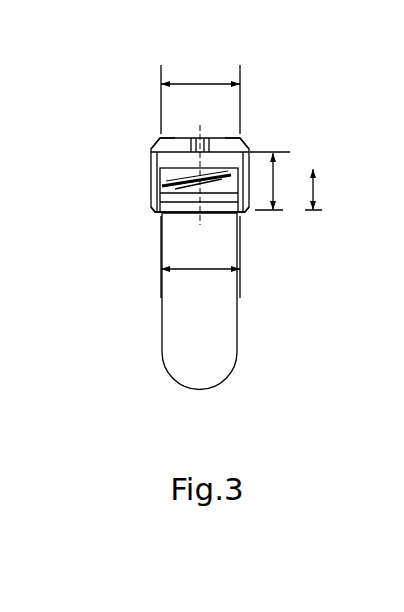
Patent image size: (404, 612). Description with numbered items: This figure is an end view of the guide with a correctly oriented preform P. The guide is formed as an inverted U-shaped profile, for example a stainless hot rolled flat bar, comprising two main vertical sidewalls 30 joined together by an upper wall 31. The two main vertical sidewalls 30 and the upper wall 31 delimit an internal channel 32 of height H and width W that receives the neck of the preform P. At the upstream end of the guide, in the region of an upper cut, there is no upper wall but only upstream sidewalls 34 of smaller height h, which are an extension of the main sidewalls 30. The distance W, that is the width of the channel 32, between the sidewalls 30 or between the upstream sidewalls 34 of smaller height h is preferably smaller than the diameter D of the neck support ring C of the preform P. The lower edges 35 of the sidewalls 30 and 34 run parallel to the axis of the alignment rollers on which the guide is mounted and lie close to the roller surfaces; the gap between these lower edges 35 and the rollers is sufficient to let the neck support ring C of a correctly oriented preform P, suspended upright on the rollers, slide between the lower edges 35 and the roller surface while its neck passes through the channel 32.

The main vertical sidewalls 30 is at (149, 156).
The upper wall 31 is at (163, 143).
The internal channel 32 is at (234, 152).
The upstream sidewalls 34 is at (150, 196).
The lower edges 35 is at (148, 218).
The preform P is at (183, 364).
The neck support ring C is at (208, 218).
The width of channel W is at (200, 95).
The diameter of neck support ring D is at (200, 257).
The height of channel H is at (286, 181).
The height of upstream sidewalls h is at (321, 189).